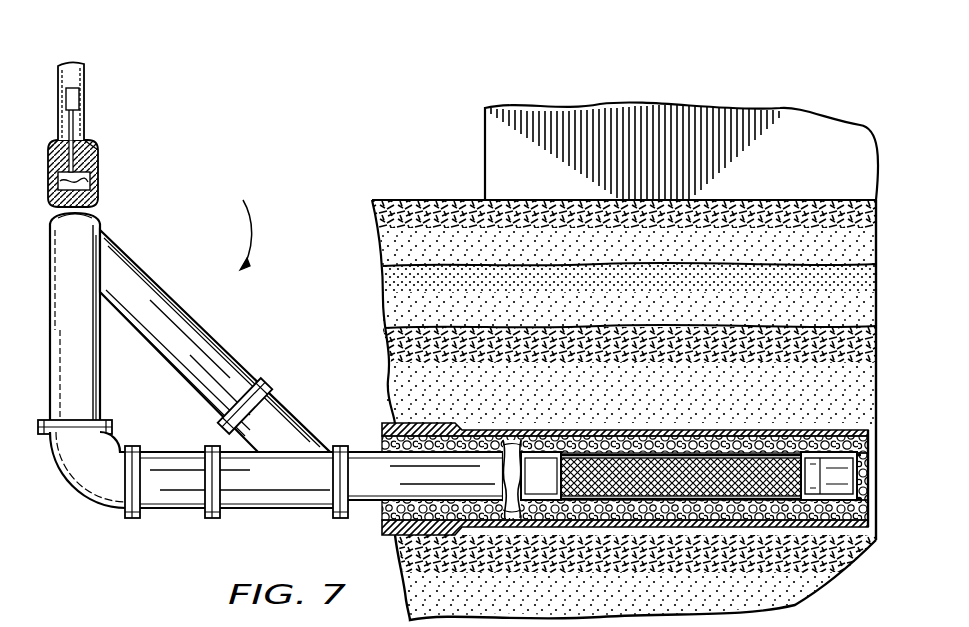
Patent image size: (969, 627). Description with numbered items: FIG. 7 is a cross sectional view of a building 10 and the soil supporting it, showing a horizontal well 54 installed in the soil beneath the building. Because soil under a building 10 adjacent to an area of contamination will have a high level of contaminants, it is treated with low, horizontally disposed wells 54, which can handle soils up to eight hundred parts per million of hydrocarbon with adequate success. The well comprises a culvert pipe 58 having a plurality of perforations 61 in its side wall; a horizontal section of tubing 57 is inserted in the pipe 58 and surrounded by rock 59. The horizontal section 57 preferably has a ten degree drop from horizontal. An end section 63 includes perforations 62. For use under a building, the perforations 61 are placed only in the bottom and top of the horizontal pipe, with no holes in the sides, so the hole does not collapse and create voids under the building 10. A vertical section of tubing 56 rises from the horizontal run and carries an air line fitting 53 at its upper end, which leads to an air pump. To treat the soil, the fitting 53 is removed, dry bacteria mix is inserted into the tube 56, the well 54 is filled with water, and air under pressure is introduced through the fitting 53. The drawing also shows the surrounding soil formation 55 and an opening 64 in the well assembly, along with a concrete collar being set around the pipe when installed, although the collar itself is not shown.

The building 10 is at (493, 157).
The air line fitting 53 is at (86, 134).
The horizontal well 54 is at (241, 224).
The soil formation 55 is at (400, 247).
The vertical section of tubing 56 is at (94, 402).
The horizontal section of tubing 57 is at (365, 508).
The culvert pipe 58 is at (385, 428).
The rock 59 is at (385, 446).
The perforations 61 is at (690, 432).
The perforations 62 is at (625, 578).
The end section 63 is at (755, 436).
The opening 64 is at (597, 433).